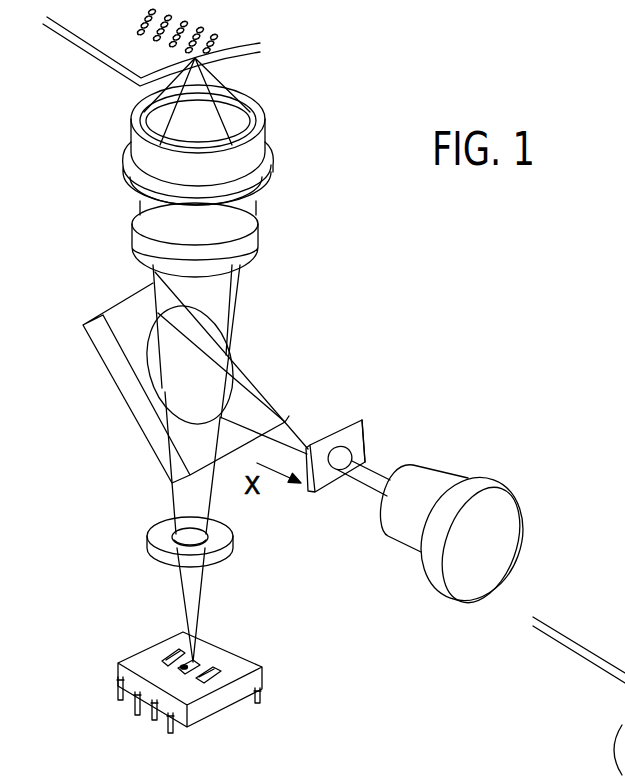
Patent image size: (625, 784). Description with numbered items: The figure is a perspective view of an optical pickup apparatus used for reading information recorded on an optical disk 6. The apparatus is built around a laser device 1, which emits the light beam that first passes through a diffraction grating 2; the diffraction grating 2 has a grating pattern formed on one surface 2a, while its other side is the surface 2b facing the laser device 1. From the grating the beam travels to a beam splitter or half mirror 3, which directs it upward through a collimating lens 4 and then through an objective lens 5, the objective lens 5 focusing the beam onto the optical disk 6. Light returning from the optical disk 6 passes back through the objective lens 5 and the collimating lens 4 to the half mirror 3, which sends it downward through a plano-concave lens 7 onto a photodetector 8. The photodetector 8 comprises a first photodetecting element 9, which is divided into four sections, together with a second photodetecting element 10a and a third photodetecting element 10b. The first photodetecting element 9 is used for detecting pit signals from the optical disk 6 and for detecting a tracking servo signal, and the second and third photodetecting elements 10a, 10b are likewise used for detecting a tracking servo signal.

The laser device 1 is at (495, 485).
The diffraction grating 2 is at (360, 422).
The surface of the diffraction grating 2a is at (343, 428).
The plate face 2b is at (367, 442).
The beam splitter or half mirror 3 is at (243, 350).
The collimating lens 4 is at (252, 229).
The objective lens 5 is at (267, 161).
The optical disk 6 is at (93, 33).
The plano-concave lens 7 is at (148, 543).
The photodetector 8 is at (117, 676).
The first photodetecting element 9 is at (193, 663).
The second photodetecting element 10a is at (162, 661).
The third photodetecting element 10b is at (202, 683).